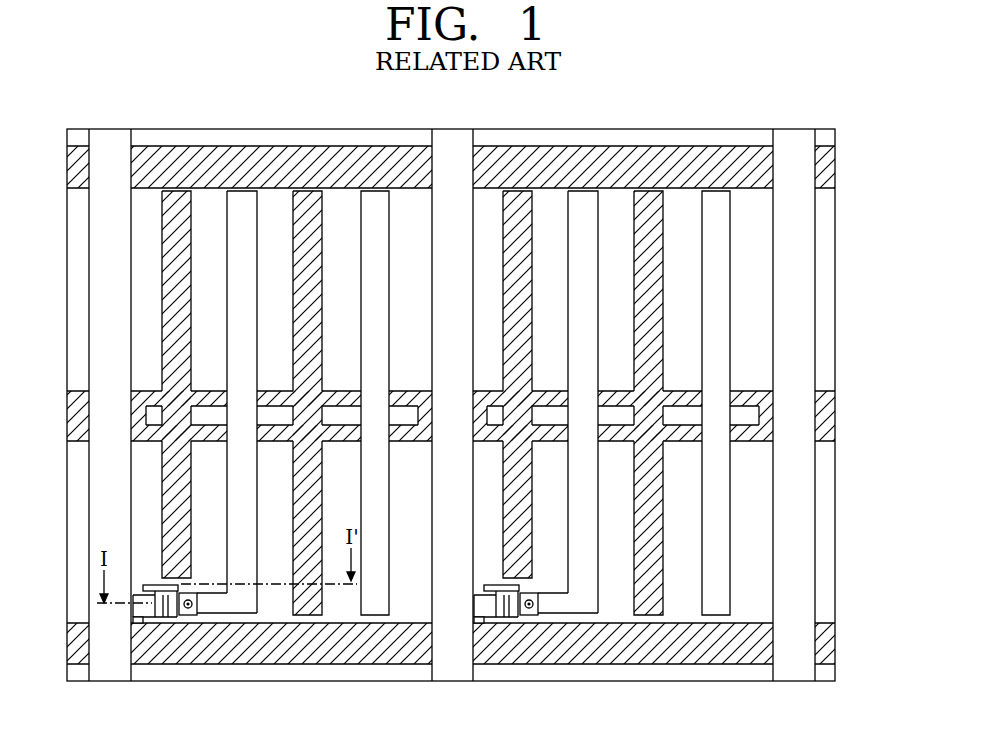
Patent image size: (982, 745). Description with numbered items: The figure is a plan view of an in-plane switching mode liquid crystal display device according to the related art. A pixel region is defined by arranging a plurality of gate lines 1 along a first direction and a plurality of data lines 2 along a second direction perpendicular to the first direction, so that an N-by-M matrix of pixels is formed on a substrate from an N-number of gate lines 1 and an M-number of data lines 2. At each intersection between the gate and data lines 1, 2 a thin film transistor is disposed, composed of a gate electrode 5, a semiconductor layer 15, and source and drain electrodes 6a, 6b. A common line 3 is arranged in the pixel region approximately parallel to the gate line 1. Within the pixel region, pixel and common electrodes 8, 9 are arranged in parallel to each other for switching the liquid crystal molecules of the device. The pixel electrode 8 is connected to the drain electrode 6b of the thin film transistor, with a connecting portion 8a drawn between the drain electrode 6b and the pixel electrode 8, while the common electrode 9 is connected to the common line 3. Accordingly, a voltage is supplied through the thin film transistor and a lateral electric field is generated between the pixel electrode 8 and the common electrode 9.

The gate line 1 is at (830, 163).
The data line 2 is at (808, 553).
The common line 3 is at (835, 412).
The gate electrode 5 is at (145, 606).
The source electrode 6a is at (138, 623).
The drain electrode 6b is at (178, 618).
The pixel electrode 8 is at (380, 603).
The pixel electrode connection portion 8a is at (218, 614).
The common electrode 9 is at (308, 616).
The semiconductor layer 15 is at (189, 616).